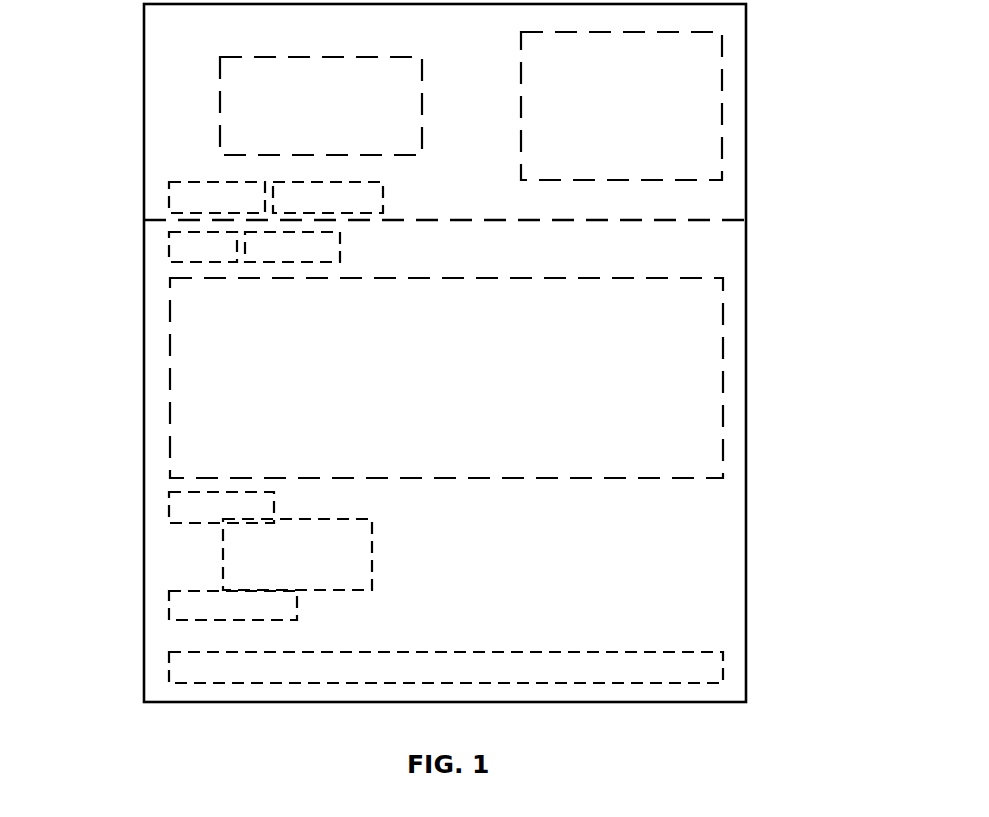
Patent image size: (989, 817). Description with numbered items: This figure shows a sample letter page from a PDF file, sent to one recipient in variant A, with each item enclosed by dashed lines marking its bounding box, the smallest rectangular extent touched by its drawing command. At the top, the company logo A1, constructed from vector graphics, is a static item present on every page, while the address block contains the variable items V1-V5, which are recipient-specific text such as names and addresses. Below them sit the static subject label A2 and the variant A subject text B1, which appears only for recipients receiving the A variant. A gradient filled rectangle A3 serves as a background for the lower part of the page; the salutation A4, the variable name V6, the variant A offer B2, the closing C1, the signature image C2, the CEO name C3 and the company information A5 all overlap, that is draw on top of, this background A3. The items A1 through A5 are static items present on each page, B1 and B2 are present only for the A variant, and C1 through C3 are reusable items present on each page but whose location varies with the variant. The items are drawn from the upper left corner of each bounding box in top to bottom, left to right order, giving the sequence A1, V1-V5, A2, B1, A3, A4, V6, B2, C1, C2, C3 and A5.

The variable items V1-V5 is at (220, 107).
The company logo A1 is at (722, 105).
The static subject label item A2 is at (169, 197).
The variant A subject item B1 is at (383, 197).
The gradient filled rectangle A3 is at (715, 550).
The static salutation item A4 is at (169, 247).
The variable name item V6 is at (340, 247).
The variant A offer item B2 is at (170, 367).
The reusable closing item C1 is at (169, 508).
The signature image C2 is at (223, 557).
The reusable CEO name item C3 is at (169, 606).
The static company info item A5 is at (169, 668).